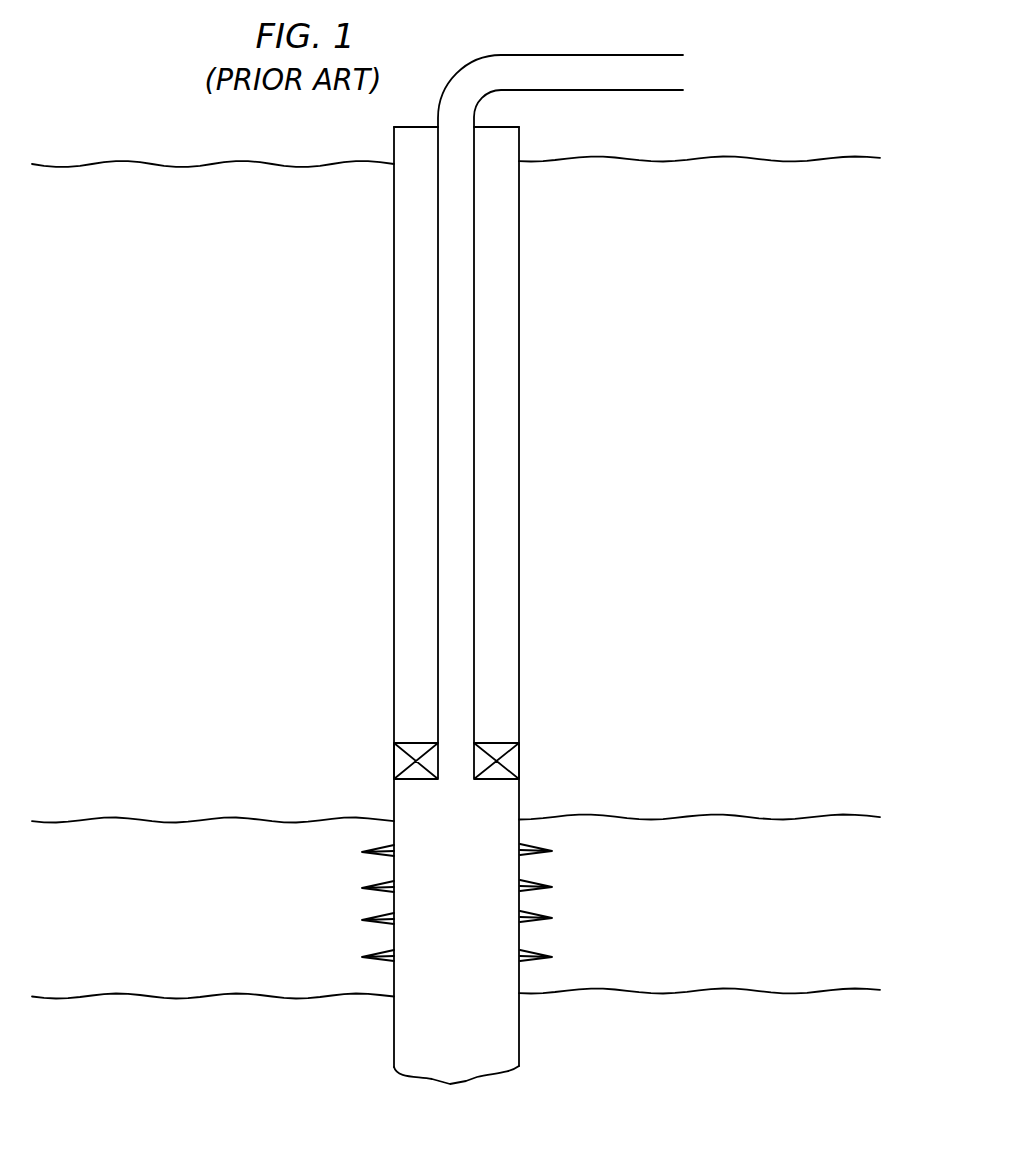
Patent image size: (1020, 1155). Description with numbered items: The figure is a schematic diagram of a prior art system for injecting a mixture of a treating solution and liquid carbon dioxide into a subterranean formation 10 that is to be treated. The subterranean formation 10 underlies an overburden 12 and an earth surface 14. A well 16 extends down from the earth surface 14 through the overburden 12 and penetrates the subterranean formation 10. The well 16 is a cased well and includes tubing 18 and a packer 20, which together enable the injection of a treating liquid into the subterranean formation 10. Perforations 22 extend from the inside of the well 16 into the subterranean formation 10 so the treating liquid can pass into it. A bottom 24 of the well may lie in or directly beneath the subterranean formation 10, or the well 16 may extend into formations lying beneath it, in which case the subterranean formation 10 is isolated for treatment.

The subterranean formation 10 is at (752, 916).
The overburden 12 is at (753, 482).
The earth surface 14 is at (752, 155).
The well 16 is at (519, 558).
The tubing 18 is at (474, 480).
The packer 20 is at (512, 760).
The perforations 22 is at (384, 886).
The bottom of the well 24 is at (476, 1078).